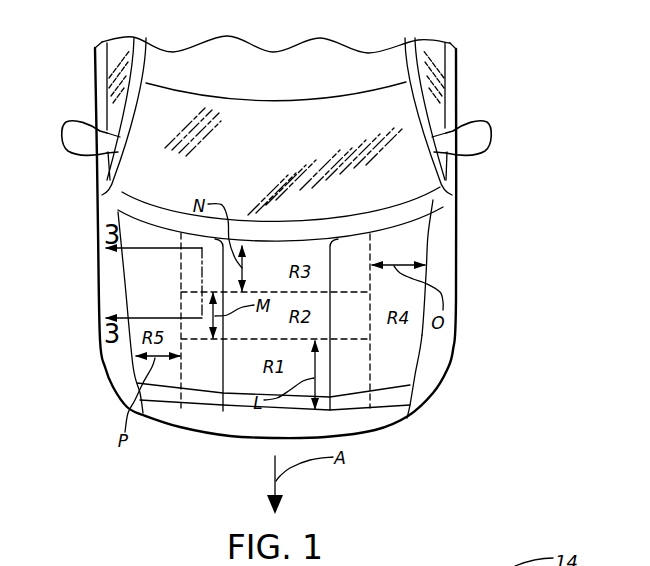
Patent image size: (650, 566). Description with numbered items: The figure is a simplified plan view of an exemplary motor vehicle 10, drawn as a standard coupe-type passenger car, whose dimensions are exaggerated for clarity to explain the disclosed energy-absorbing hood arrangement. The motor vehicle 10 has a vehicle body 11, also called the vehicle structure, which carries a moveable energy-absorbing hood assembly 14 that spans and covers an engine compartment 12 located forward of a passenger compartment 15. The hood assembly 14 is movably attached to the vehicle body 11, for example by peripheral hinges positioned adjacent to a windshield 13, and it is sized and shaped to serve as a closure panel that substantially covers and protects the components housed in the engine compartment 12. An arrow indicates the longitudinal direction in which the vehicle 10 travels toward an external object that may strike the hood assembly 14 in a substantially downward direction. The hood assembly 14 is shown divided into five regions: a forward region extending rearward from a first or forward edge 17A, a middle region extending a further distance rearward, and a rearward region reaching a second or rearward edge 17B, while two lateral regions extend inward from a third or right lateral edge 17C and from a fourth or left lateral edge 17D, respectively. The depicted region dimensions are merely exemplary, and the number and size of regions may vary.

The motor vehicle 10 is at (524, 117).
The vehicle body 11 is at (223, 59).
The engine compartment 12 is at (78, 217).
The windshield 13 is at (377, 103).
The hood assembly 14 is at (428, 273).
The passenger compartment 15 is at (53, 58).
The forward edge 17A is at (352, 410).
The rearward edge 17B is at (386, 228).
The right lateral edge 17C is at (420, 350).
The left lateral edge 17D is at (138, 368).